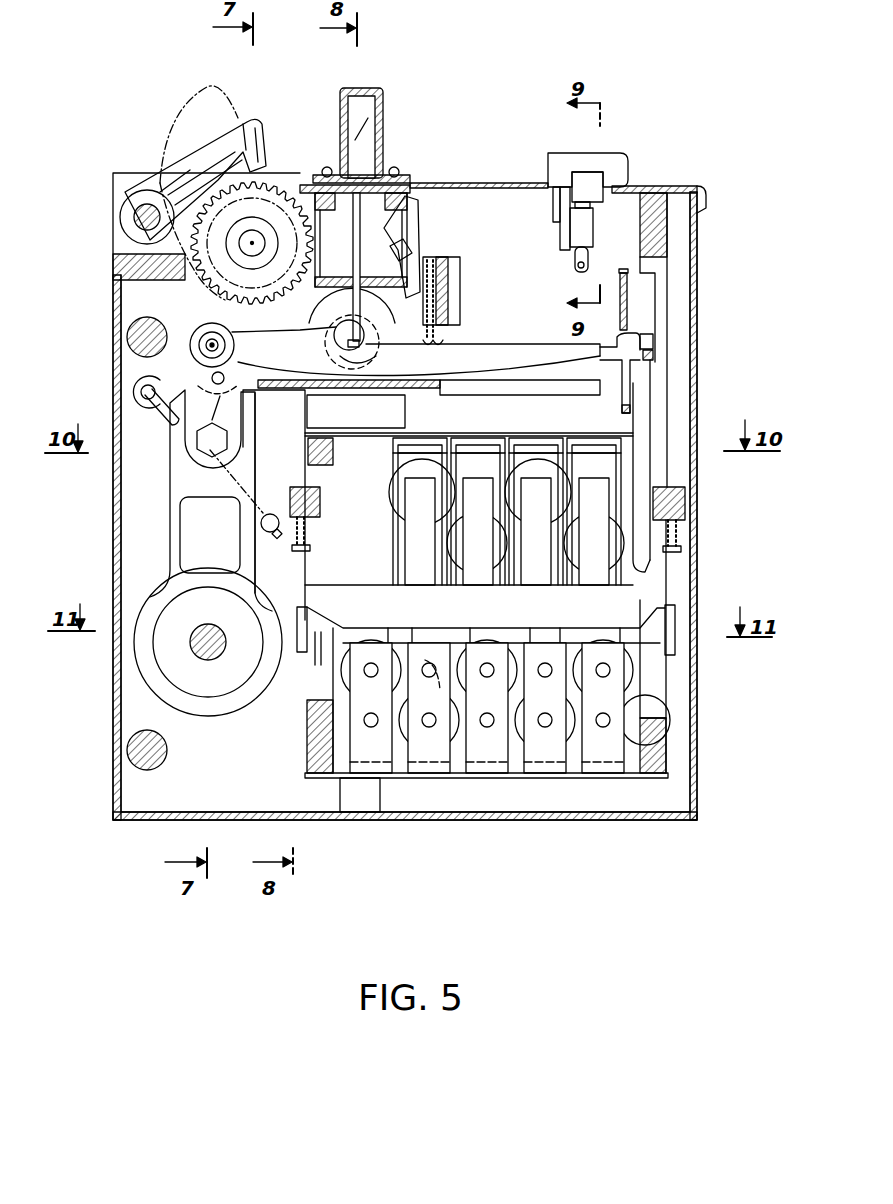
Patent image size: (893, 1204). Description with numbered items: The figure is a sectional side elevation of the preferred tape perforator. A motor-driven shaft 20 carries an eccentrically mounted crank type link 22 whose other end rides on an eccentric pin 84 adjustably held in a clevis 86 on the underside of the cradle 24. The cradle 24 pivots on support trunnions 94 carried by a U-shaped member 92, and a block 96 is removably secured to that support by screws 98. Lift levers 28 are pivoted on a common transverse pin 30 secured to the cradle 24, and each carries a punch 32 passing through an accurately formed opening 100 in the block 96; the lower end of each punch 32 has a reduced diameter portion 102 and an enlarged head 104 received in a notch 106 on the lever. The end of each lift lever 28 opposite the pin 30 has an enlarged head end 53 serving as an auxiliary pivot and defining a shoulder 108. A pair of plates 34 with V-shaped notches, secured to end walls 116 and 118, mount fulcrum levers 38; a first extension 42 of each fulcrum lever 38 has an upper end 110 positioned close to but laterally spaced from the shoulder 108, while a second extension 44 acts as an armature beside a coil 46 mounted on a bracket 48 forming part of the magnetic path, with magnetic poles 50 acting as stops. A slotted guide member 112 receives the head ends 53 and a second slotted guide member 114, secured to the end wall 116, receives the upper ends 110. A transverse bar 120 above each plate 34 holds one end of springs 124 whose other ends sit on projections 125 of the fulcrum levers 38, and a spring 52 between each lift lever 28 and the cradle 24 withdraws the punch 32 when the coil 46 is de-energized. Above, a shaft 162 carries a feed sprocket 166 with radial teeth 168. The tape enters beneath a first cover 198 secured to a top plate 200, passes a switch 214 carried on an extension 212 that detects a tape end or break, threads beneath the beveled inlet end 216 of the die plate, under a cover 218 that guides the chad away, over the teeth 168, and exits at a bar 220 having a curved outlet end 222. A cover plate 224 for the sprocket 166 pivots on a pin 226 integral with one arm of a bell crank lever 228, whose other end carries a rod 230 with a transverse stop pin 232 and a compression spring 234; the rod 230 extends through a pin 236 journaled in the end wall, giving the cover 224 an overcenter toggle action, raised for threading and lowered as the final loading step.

The shaft 20 is at (192, 644).
The crank type link 22 is at (172, 538).
The cradle 24 is at (265, 383).
The lift levers 28 is at (538, 375).
The transverse pin 30 is at (206, 346).
The punch 32 is at (352, 243).
The plates 34 is at (303, 660).
The fulcrum lever 38 is at (578, 607).
The first extension 42 is at (645, 420).
The second extension 44 is at (422, 552).
The coil 46 is at (462, 752).
The bracket 48 is at (430, 755).
The magnetic poles 50 is at (438, 660).
The spring 52 is at (440, 334).
The auxiliary pivot 53 is at (638, 338).
The eccentric pin 84 is at (205, 445).
The clevis 86 is at (184, 410).
The U-shaped member 92 is at (442, 268).
The support trunnions 94 is at (366, 336).
The block 96 is at (404, 230).
The screws 98 is at (406, 250).
The openings 100 is at (316, 176).
The reduced diameter portion 102 is at (352, 320).
The enlarged head 104 is at (372, 355).
The notch 106 is at (348, 346).
The shoulder 108 is at (655, 364).
The upper end 110 is at (654, 345).
The slotted guide member 112 is at (627, 284).
The slotted guide member 114 is at (652, 232).
The end wall 116 is at (668, 252).
The end wall 118 is at (310, 742).
The transverse bar 120 is at (686, 502).
The springs 124 is at (678, 538).
The projections 125 is at (682, 552).
The shaft 162 is at (240, 235).
The feed sprocket 166 is at (222, 168).
The teeth 168 is at (178, 188).
The first cover 198 is at (618, 160).
The top plate 200 is at (702, 187).
The extension 212 is at (585, 180).
The switch 214 is at (578, 232).
The beveled inlet end 216 is at (408, 182).
The cover 218 is at (382, 98).
The bar 220 is at (116, 290).
The curved outlet end 222 is at (115, 265).
The cover plate 224 is at (240, 130).
The pin 226 is at (138, 213).
The bell crank lever 228 is at (196, 372).
The rod 230 is at (160, 398).
The transverse stop pin 232 is at (212, 452).
The compression spring 234 is at (243, 498).
The pin 236 is at (263, 530).